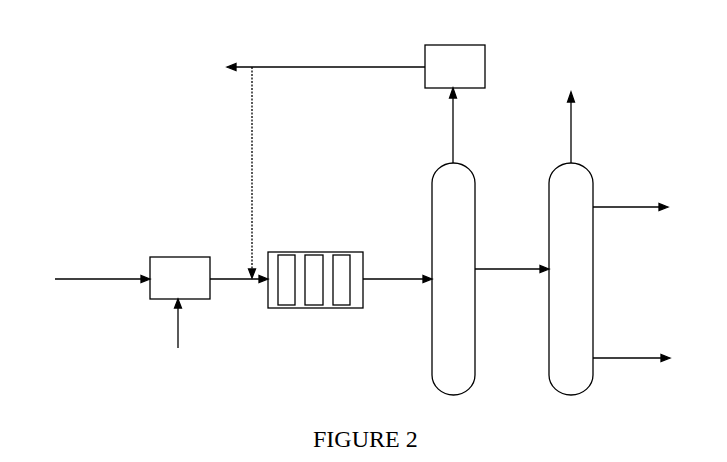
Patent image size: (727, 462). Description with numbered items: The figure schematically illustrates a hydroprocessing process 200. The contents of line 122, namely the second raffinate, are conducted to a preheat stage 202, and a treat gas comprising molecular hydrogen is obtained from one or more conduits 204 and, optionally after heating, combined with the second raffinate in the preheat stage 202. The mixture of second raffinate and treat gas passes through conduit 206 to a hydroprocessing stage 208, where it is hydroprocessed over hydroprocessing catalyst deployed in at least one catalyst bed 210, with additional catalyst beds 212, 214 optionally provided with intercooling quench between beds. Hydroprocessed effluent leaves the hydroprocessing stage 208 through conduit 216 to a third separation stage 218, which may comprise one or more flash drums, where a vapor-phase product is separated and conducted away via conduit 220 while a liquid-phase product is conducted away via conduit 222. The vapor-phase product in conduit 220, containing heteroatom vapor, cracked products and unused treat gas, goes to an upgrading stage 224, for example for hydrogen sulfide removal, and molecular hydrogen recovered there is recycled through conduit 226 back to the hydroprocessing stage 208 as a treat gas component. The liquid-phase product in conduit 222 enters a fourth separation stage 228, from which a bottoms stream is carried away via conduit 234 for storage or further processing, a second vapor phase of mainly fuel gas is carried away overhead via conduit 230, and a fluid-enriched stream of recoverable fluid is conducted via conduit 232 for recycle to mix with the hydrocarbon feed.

The process 200 is at (152, 42).
The line 122 is at (83, 275).
The preheat stage 202 is at (180, 278).
The conduit 204 is at (177, 311).
The conduit 206 is at (240, 275).
The hydroprocessing stage 208 is at (268, 303).
The catalyst bed 210 is at (286, 253).
The additional catalyst bed 212 is at (314, 253).
The additional catalyst bed 214 is at (341, 253).
The conduit 216 is at (387, 281).
The third separation stage 218 is at (453, 279).
The vapor-phase product conduit 220 is at (454, 138).
The liquid-phase product conduit 222 is at (503, 271).
The upgrading stage 224 is at (455, 66).
The conduit 226 is at (321, 67).
The fourth separation stage 228 is at (571, 279).
The conduit 230 is at (573, 138).
The conduit 232 is at (622, 209).
The conduit 234 is at (622, 360).